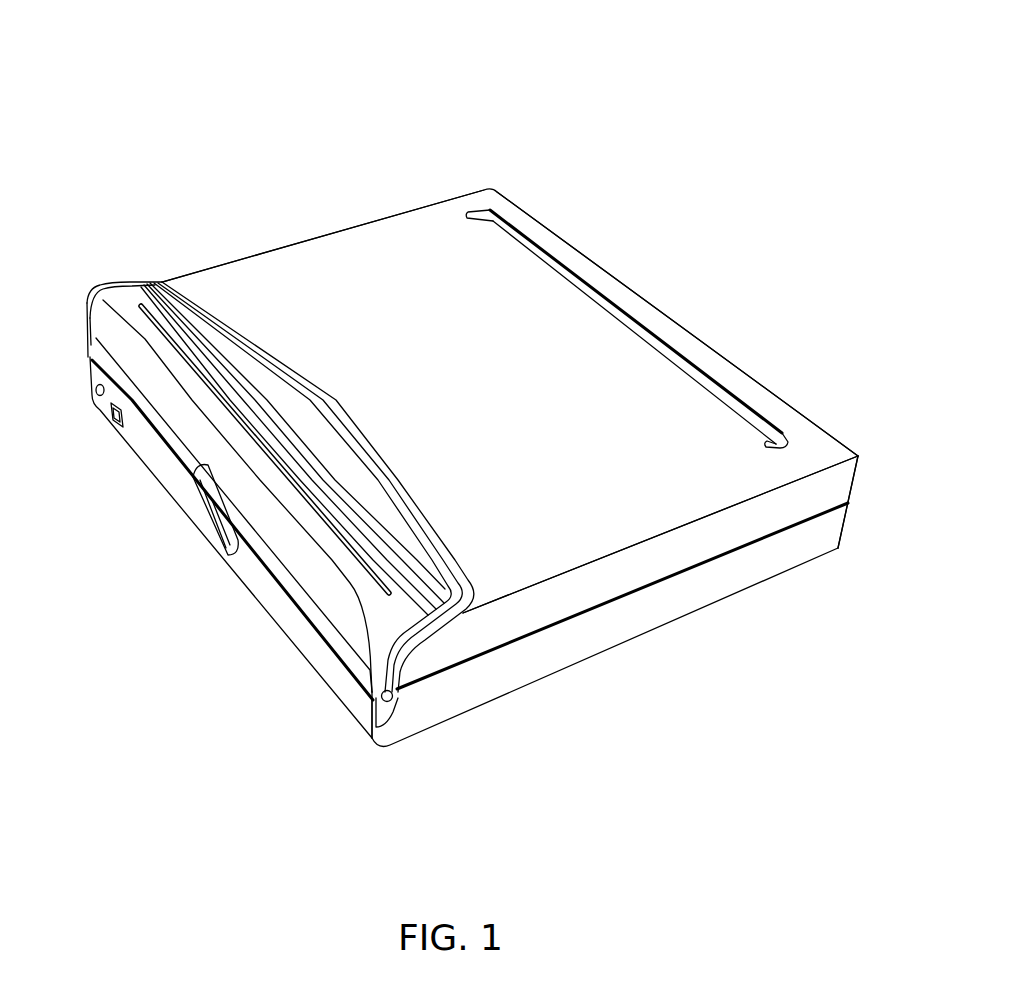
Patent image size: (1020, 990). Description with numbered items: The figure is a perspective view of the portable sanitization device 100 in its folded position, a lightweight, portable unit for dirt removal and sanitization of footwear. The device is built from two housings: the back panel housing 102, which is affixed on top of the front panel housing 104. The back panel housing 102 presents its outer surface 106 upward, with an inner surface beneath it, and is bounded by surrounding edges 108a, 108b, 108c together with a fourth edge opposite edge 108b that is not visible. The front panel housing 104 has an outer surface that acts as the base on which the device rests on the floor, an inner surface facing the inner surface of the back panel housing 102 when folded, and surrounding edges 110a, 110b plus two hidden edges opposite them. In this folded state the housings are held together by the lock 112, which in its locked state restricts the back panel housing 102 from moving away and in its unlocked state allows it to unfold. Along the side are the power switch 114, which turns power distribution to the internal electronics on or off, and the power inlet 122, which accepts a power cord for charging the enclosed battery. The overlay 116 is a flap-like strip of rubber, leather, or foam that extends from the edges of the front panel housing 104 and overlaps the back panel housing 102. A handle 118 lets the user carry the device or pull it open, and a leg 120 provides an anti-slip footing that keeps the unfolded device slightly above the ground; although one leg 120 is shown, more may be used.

The portable sanitization device 100 is at (180, 43).
The back panel housing 102 is at (489, 183).
The front panel housing 104 is at (840, 549).
The outer surface 106 is at (615, 530).
The surrounding edge 108a is at (312, 232).
The surrounding edge 108b is at (637, 290).
The surrounding edge 108c is at (630, 583).
The surrounding edge 110a is at (460, 704).
The surrounding edge 110b is at (268, 600).
The lock 112 is at (225, 530).
The power switch 114 is at (116, 425).
The overlay 116 is at (127, 305).
The handle 118 is at (235, 330).
The leg 120 is at (748, 393).
The power inlet 122 is at (96, 391).